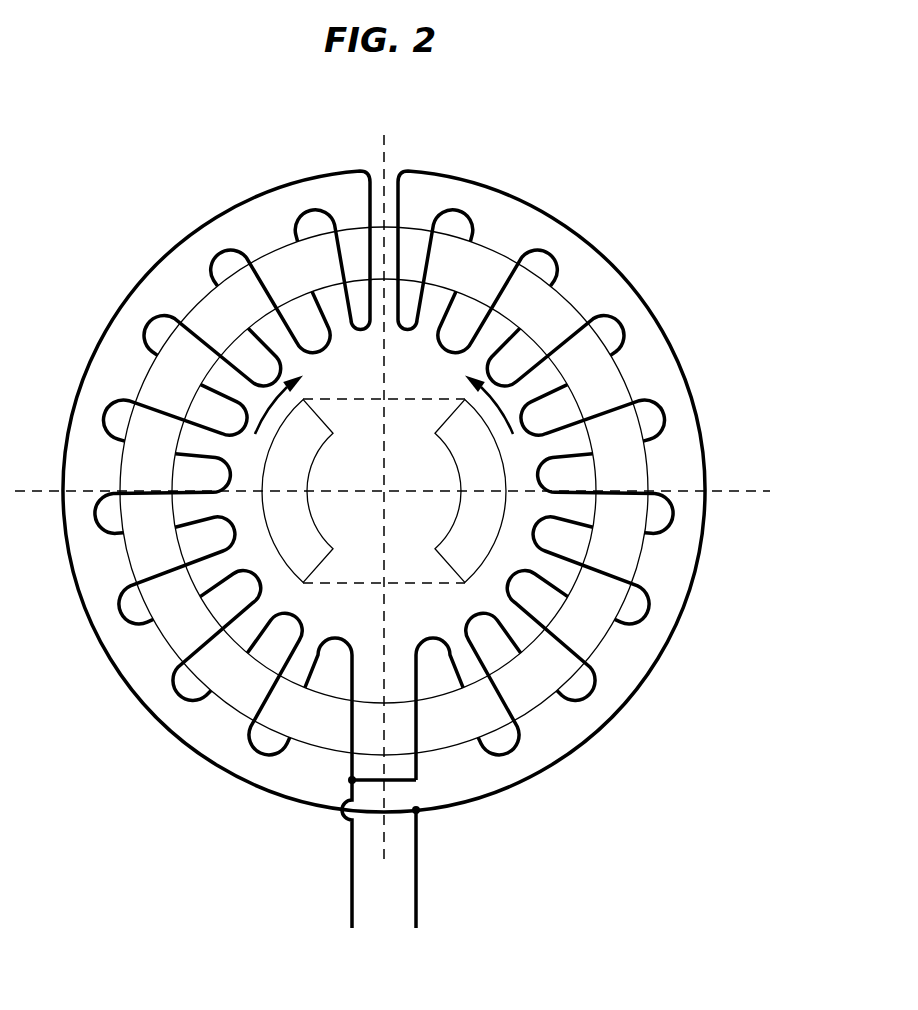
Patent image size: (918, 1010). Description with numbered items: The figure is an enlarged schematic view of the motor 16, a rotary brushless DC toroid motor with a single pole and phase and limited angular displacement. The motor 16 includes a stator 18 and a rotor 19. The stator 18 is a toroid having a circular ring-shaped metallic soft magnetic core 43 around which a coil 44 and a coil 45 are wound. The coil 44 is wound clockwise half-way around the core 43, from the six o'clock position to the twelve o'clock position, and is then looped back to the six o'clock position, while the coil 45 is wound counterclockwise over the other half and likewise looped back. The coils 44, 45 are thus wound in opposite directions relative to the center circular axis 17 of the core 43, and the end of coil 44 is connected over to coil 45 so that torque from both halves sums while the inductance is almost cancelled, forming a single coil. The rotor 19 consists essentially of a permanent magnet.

The motor 16 is at (105, 180).
The center circular axis 17 is at (384, 491).
The stator 18 is at (588, 778).
The rotor 19 is at (422, 352).
The core 43 is at (632, 560).
The coil 44 is at (332, 867).
The coil 45 is at (436, 867).